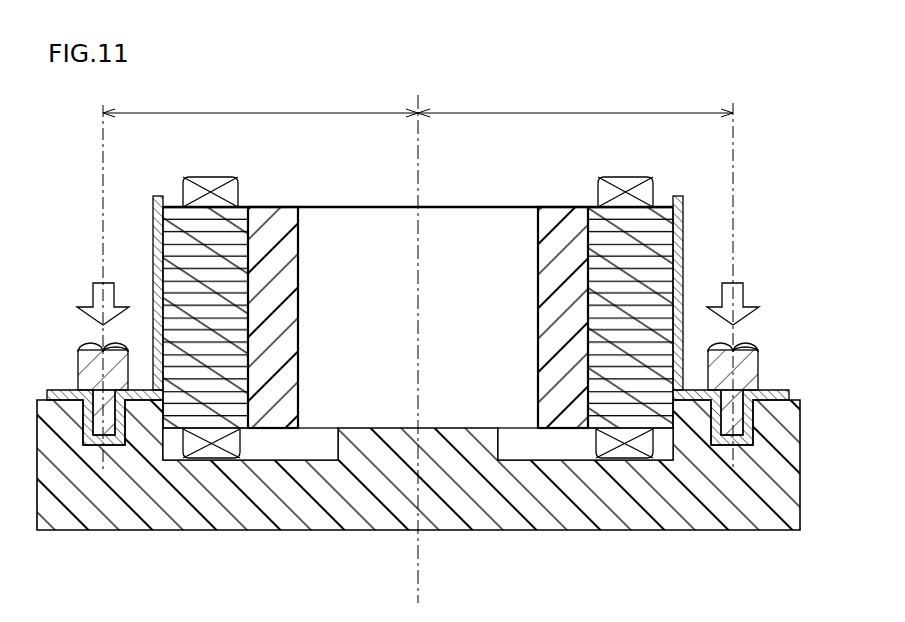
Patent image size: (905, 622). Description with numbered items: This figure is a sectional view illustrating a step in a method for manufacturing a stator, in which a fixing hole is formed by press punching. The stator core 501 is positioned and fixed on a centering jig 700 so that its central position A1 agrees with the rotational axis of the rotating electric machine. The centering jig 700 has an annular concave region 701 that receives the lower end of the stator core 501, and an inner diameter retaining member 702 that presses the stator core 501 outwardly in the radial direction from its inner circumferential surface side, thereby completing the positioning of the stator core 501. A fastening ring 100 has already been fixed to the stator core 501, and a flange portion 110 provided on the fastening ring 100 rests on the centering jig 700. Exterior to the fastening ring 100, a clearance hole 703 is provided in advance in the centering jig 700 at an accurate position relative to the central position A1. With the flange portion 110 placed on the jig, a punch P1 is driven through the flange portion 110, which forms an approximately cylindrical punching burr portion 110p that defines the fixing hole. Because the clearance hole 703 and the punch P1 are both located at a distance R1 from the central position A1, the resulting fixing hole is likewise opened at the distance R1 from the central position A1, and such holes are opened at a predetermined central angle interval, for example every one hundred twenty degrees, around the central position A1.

The fastening ring 100 is at (155, 232).
The flange portion 110 is at (51, 390).
The punching burr portion 110p is at (84, 424).
The stator core 501 is at (196, 233).
The centering jig 700 is at (322, 493).
The annular concave region 701 is at (271, 440).
The inner diameter retaining member 702 is at (567, 187).
The clearance hole 703 is at (123, 438).
The punch P1 is at (78, 363).
The distance R1 is at (418, 103).
The central position A1 is at (425, 582).